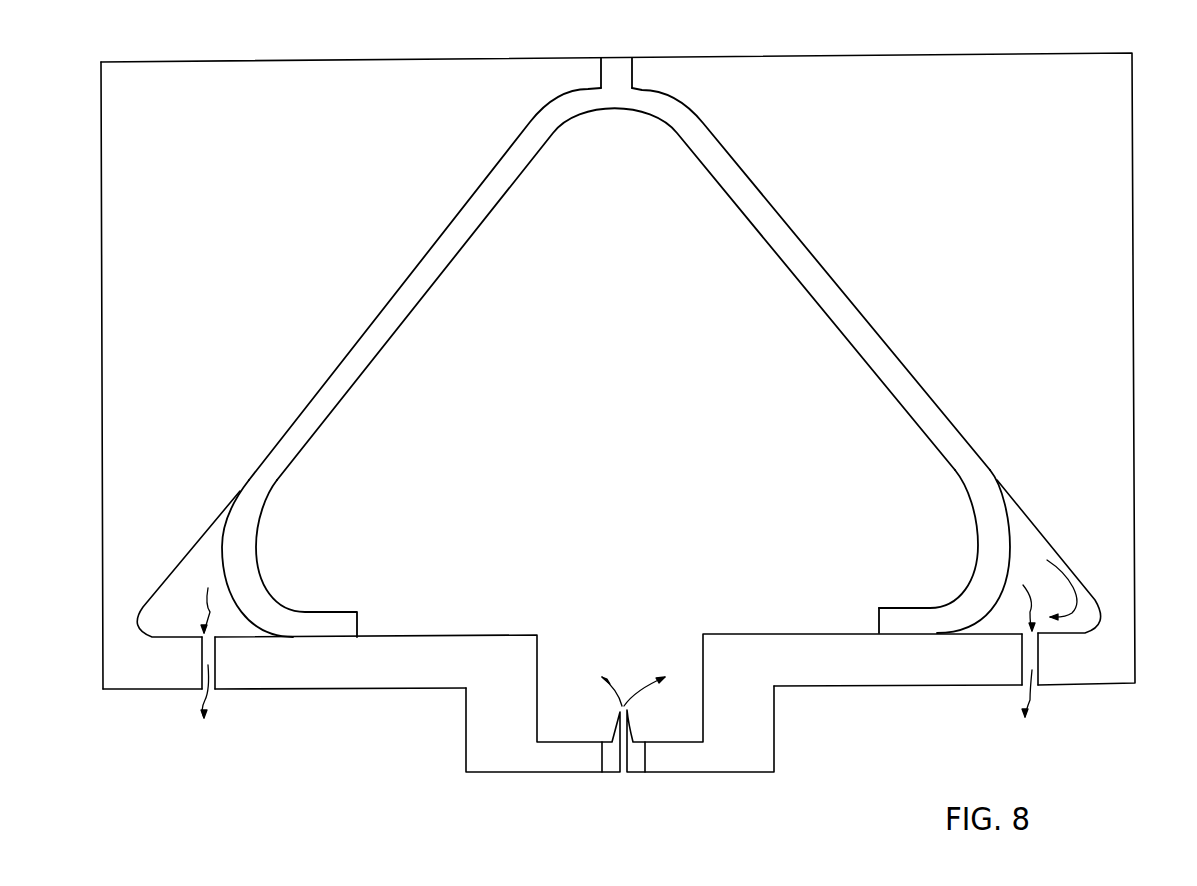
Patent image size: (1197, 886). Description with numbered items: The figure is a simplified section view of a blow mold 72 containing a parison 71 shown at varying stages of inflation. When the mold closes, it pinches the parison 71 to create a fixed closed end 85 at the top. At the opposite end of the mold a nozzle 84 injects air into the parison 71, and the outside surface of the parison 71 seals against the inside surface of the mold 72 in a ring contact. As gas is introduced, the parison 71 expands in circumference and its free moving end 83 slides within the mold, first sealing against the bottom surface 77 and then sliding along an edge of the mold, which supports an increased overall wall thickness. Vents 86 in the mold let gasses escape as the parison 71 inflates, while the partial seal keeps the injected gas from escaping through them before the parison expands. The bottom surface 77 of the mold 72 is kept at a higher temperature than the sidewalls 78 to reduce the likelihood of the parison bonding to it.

The parison 71 is at (848, 318).
The mold 72 is at (1008, 333).
The bottom surface 77 is at (730, 672).
The sidewalls 78 is at (982, 462).
The free moving end 83 is at (887, 636).
The nozzle 84 is at (613, 757).
The fixed closed end 85 is at (602, 97).
The vents 86 is at (202, 667).